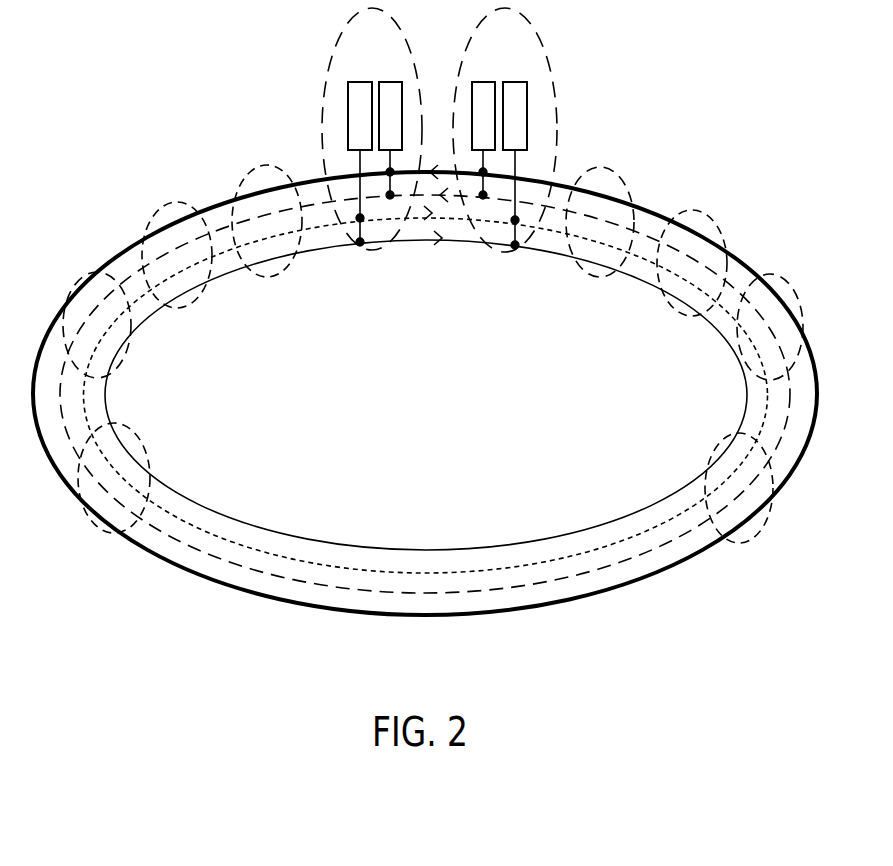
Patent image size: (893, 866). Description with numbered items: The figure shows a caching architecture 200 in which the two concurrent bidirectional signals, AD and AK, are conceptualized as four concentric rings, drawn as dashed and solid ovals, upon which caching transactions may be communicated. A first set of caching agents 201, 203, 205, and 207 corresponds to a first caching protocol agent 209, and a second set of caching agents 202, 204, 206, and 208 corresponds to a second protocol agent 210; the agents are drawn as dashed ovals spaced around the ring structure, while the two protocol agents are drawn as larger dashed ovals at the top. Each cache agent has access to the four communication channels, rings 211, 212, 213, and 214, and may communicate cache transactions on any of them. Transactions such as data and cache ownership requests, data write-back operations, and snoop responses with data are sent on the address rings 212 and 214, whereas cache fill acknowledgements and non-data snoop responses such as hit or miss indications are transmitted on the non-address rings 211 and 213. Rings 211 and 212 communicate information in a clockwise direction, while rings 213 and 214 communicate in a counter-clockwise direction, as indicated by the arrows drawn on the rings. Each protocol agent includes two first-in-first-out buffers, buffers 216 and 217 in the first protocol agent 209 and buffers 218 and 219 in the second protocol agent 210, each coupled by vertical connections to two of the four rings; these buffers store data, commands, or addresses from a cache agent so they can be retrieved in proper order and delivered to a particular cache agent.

The caching architecture 200 is at (425, 412).
The caching agent 201 is at (95, 494).
The caching agent 202 is at (79, 337).
The caching agent 203 is at (159, 269).
The caching agent 204 is at (249, 234).
The caching agent 205 is at (582, 236).
The caching agent 206 is at (674, 277).
The caching agent 207 is at (752, 341).
The caching agent 208 is at (720, 501).
The first caching protocol agent 209 is at (343, 129).
The second protocol agent 210 is at (531, 130).
The ring 211 is at (427, 548).
The ring 212 is at (423, 570).
The ring 213 is at (426, 590).
The ring 214 is at (422, 608).
The first-in-first-out buffer 216 is at (348, 93).
The first-in-first-out buffer 217 is at (379, 124).
The first-in-first-out buffer 218 is at (522, 98).
The first-in-first-out buffer 219 is at (495, 125).